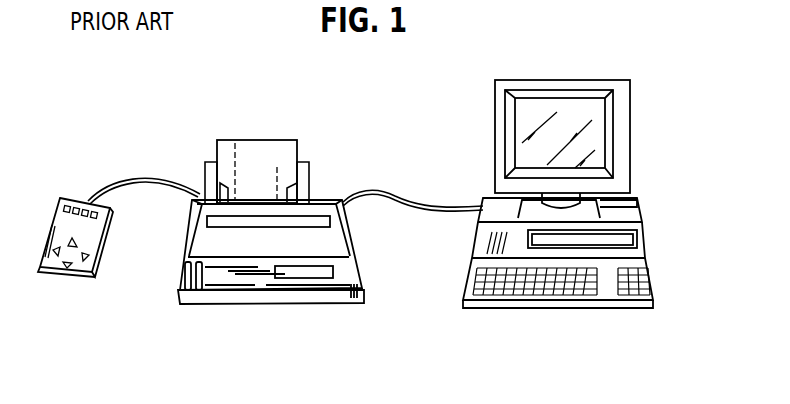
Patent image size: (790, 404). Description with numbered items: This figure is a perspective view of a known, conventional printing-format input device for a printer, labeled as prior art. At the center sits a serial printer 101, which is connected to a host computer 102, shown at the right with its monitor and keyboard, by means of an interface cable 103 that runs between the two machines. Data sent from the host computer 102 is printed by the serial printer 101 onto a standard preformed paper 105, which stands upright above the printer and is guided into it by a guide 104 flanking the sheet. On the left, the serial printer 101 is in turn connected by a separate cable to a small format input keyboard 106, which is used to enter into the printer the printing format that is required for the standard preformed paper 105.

The serial printer 101 is at (360, 300).
The host computer 102 is at (520, 306).
The interface cable 103 is at (418, 200).
The guide 104 is at (205, 162).
The standard preformed paper 105 is at (270, 141).
The format input keyboard 106 is at (85, 282).